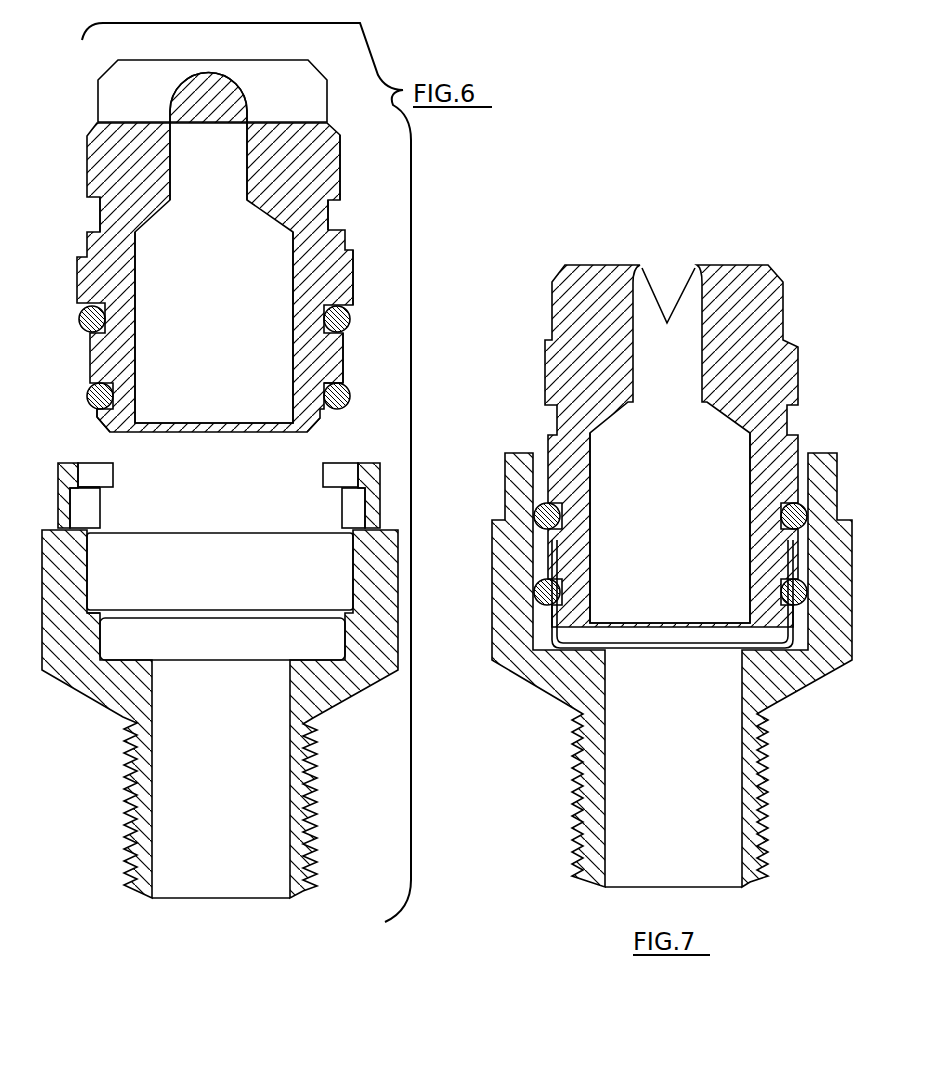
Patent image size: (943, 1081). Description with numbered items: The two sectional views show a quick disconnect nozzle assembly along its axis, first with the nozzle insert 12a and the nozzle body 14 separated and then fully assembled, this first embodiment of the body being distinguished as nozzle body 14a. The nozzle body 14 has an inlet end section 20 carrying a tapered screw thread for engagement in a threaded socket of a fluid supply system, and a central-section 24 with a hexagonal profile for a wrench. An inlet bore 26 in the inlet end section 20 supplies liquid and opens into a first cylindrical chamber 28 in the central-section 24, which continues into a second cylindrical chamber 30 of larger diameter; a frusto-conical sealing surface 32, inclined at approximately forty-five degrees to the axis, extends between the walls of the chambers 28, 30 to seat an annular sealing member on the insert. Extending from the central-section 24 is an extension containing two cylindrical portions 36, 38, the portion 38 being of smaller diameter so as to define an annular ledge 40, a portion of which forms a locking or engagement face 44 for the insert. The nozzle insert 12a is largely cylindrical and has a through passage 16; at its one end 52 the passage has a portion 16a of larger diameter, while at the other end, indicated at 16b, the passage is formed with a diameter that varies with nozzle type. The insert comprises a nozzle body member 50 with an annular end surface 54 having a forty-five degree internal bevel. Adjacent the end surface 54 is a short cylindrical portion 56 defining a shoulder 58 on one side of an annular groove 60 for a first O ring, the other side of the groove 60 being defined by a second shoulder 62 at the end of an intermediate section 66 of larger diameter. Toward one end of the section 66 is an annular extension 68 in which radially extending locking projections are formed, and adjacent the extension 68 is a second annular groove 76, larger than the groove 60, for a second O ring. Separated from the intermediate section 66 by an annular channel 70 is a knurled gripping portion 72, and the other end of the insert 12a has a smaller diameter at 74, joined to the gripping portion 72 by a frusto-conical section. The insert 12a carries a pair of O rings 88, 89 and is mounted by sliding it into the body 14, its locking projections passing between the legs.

In FIG. 6, the nozzle insert 12a is at (60, 273).
In FIG. 6, the nozzle body 14 is at (32, 611).
In FIG. 7, the nozzle body 14a is at (808, 684).
In FIG. 7, the through passage 16 is at (702, 350).
In FIG. 6, the larger diameter portion of passage 16a is at (293, 300).
In FIG. 7, the larger diameter portion of passage 16a is at (750, 472).
In FIG. 6, the other end of passage 16b is at (243, 140).
In FIG. 6, the inlet end section 20 is at (318, 816).
In FIG. 6, the central-section 24 is at (358, 677).
In FIG. 6, the inlet bore 26 is at (293, 872).
In FIG. 6, the first cylindrical chamber 28 is at (345, 636).
In FIG. 6, the second cylindrical chamber 30 is at (353, 564).
In FIG. 6, the frusto-conical sealing surface 32 is at (93, 613).
In FIG. 6, the cylindrical portion 36 is at (100, 510).
In FIG. 6, the cylindrical portion 38 is at (113, 472).
In FIG. 6, the annular ledge 40 is at (335, 488).
In FIG. 6, the locking or engagement face 44 is at (96, 490).
In FIG. 6, the nozzle body member 50 is at (88, 244).
In FIG. 7, the one end 52 is at (575, 622).
In FIG. 6, the annular end surface 54 is at (318, 432).
In FIG. 6, the short cylindrical portion 56 is at (103, 419).
In FIG. 6, the shoulder 58 is at (110, 414).
In FIG. 6, the annular groove 60 is at (348, 383).
In FIG. 6, the second shoulder 62 is at (88, 388).
In FIG. 6, the intermediate section 66 is at (346, 360).
In FIG. 6, the annular extension 68 is at (356, 284).
In FIG. 6, the annular channel 70 is at (333, 218).
In FIG. 6, the gripping portion 72 is at (331, 173).
In FIG. 6, the other end of nozzle insert 74 is at (322, 132).
In FIG. 6, the second annular groove 76 is at (106, 300).
In FIG. 6, the O ring 88 is at (348, 401).
In FIG. 7, the O ring 88 is at (780, 592).
In FIG. 6, the O ring 89 is at (346, 310).
In FIG. 7, the O ring 89 is at (536, 513).